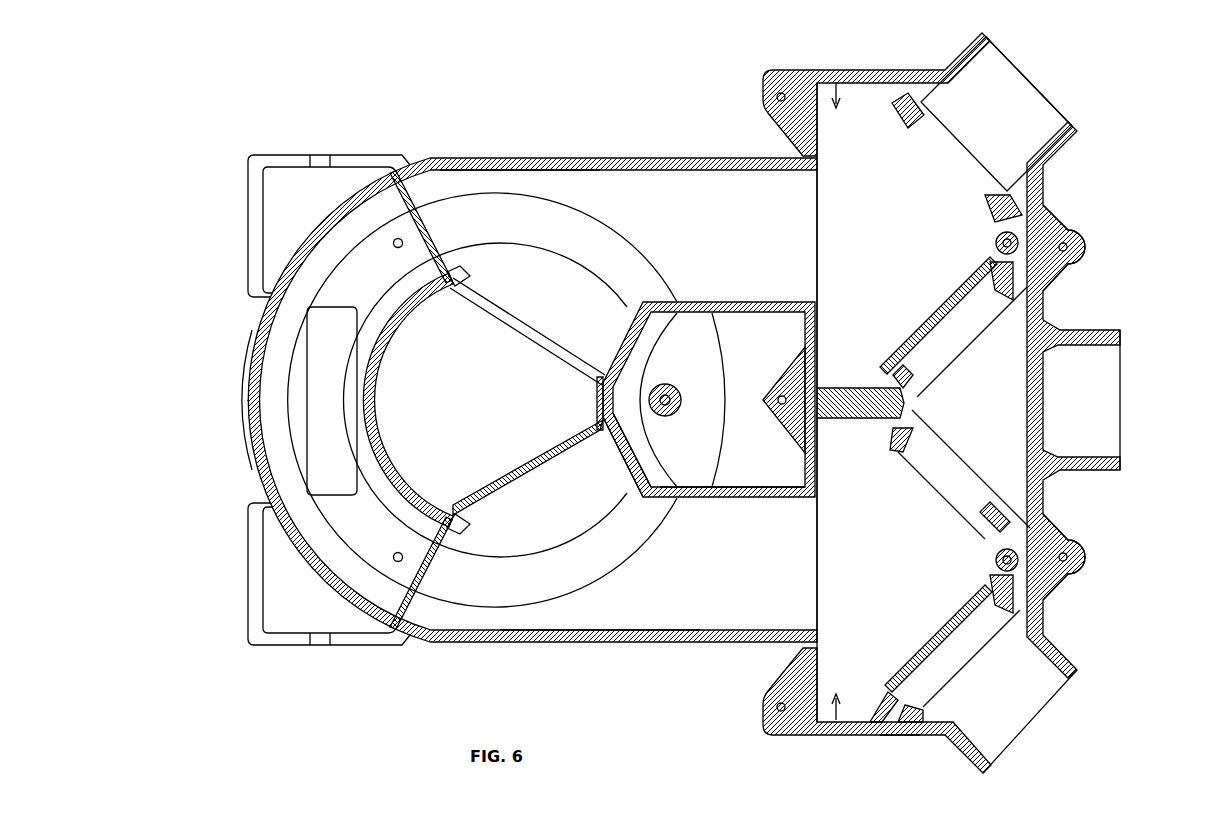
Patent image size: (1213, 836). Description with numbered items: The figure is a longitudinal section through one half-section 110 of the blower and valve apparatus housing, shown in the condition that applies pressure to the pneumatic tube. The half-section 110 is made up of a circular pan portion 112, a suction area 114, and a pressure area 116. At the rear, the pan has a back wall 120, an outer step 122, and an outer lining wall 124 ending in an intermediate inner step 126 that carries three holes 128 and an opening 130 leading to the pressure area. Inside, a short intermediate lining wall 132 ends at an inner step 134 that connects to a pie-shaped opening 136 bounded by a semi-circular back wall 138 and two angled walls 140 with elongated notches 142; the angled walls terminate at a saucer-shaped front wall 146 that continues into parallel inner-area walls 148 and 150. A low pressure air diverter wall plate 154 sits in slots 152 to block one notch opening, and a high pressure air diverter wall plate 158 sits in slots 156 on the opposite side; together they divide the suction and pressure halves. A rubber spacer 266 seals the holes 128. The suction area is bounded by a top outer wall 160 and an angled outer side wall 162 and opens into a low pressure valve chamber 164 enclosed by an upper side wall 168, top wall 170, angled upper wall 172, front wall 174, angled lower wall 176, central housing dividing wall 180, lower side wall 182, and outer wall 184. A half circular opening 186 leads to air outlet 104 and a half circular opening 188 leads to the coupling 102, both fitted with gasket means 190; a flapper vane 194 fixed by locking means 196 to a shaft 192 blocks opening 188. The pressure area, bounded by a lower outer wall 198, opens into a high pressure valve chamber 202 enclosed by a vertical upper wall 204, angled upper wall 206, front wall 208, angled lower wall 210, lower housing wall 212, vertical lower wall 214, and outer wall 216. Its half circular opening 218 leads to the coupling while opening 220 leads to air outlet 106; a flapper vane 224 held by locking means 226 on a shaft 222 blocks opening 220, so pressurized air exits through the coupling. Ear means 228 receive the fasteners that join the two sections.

The coupling 102 is at (1120, 403).
The air outlet 104 is at (1043, 95).
The air outlet 106 is at (1033, 723).
The longitudinal half-section 110 is at (205, 472).
The circular pan portion 112 is at (428, 162).
The suction area 114 is at (738, 244).
The pressure area 116 is at (721, 586).
The back wall 120 is at (250, 385).
The outer step 122 is at (530, 178).
The outer lining wall 124 is at (620, 237).
The intermediate inner step 126 is at (302, 443).
The holes 128 is at (394, 245).
The opening 130 is at (322, 307).
The intermediate lining wall 132 is at (530, 234).
The inner step 134 is at (555, 296).
The pie-shaped opening 136 is at (501, 409).
The semi-circular back wall 138 is at (383, 378).
The angled walls 140 is at (483, 320).
The elongated notches 142 is at (598, 417).
The saucer-shaped front wall 146 is at (623, 442).
The inner-area wall 148 is at (737, 302).
The inner-area wall 150 is at (733, 500).
The slots 152 is at (547, 340).
The low pressure air diverter wall plate 154 is at (547, 467).
The slots 156 is at (423, 555).
The high pressure air diverter wall plate 158 is at (430, 245).
The top outer wall 160 is at (250, 248).
The angled outer side wall 162 is at (327, 155).
The low pressure valve chamber 164 is at (838, 68).
The upper side wall 168 is at (823, 137).
The top wall 170 is at (873, 70).
The angled upper wall 172 is at (887, 95).
The front wall 174 is at (1047, 213).
The angled lower wall 176 is at (893, 383).
The central housing dividing wall 180 is at (865, 388).
The lower side wall 182 is at (822, 332).
The outer wall 184 is at (891, 241).
The half circular opening 186 is at (963, 145).
The half circular opening 188 is at (968, 335).
The gasket means 190 is at (983, 537).
The shaft 192 is at (996, 245).
The flapper vane 194 is at (940, 305).
The locking means 196 is at (993, 233).
The lower outer wall 198 is at (580, 628).
The high pressure valve chamber 202 is at (838, 747).
The vertical upper wall 204 is at (835, 478).
The angled upper wall 206 is at (893, 427).
The front wall 208 is at (1040, 537).
The angled lower wall 210 is at (893, 702).
The lower housing wall 212 is at (890, 735).
The vertical lower wall 214 is at (818, 667).
The outer wall 216 is at (893, 581).
The half circular opening 218 is at (968, 458).
The opening 220 is at (970, 653).
The shaft 222 is at (993, 562).
The flapper vane 224 is at (937, 630).
The locking means 226 is at (997, 555).
The ear means 228 is at (783, 430).
The rubber spacer 266 is at (676, 386).